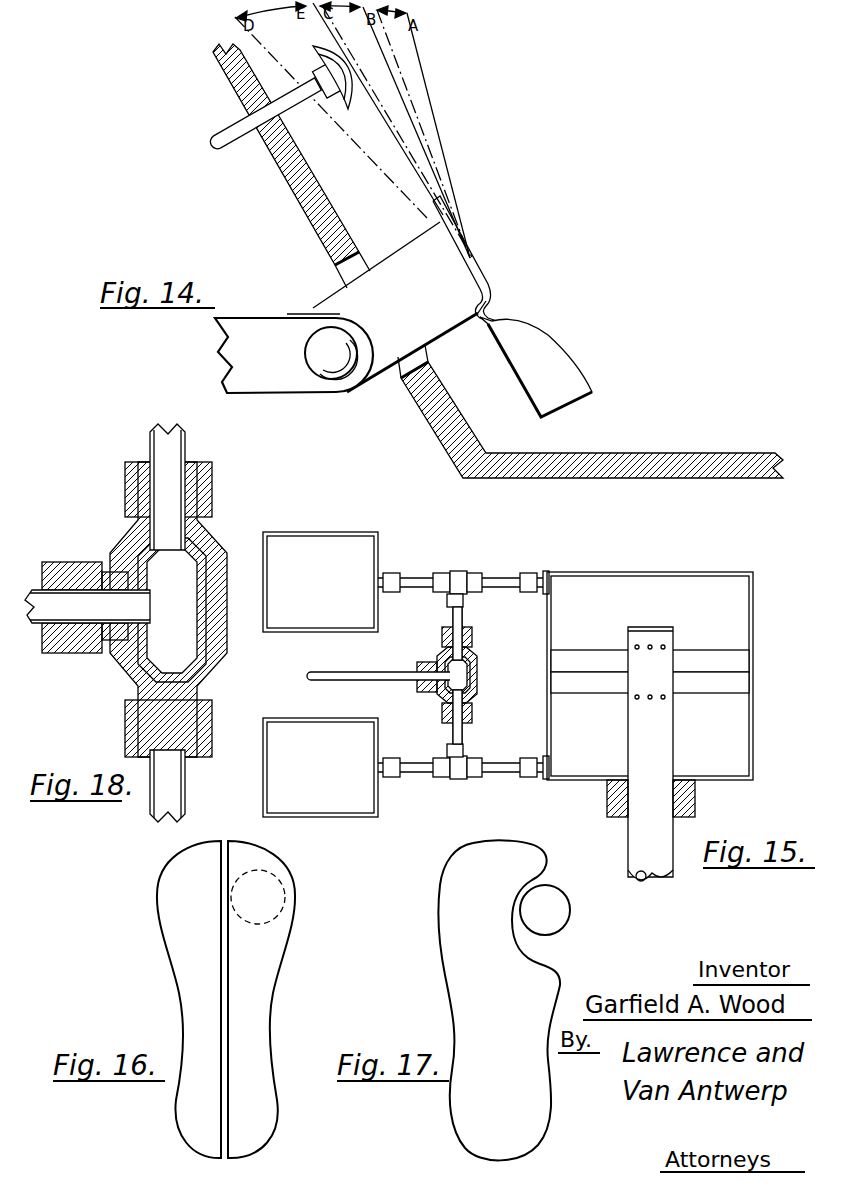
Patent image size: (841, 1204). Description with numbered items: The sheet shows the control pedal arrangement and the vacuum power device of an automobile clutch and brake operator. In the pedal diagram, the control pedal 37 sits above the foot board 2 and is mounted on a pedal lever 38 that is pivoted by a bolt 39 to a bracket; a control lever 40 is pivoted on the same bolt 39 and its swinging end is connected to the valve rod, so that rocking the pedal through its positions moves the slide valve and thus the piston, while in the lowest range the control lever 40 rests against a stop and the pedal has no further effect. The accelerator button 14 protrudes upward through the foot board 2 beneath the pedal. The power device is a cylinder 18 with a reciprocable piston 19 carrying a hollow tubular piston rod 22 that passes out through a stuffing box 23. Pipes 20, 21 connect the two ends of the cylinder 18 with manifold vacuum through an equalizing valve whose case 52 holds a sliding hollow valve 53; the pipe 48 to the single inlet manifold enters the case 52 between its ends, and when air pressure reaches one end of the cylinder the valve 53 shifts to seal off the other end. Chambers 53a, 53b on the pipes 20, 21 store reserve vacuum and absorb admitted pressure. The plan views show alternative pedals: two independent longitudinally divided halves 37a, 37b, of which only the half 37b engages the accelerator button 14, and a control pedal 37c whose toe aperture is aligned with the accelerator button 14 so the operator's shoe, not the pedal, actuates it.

In FIG. 14, the foot board 2 is at (235, 80).
In FIG. 14, the accelerator button 14 is at (340, 92).
In FIG. 16, the accelerator button 14 is at (263, 893).
In FIG. 17, the accelerator button 14 is at (542, 913).
In FIG. 15, the cylinder 18 is at (753, 630).
In FIG. 15, the piston 19 is at (733, 683).
In FIG. 18, the pipe 20 is at (170, 443).
In FIG. 15, the pipe 20 is at (498, 590).
In FIG. 18, the pipe 21 is at (168, 787).
In FIG. 15, the pipe 21 is at (485, 790).
In FIG. 15, the piston rod 22 is at (658, 742).
In FIG. 15, the stuffing box 23 is at (688, 797).
In FIG. 14, the control pedal 37 is at (490, 280).
In FIG. 16, the pedal half 37a is at (197, 975).
In FIG. 16, the pedal half 37b is at (267, 970).
In FIG. 17, the control pedal 37c is at (540, 985).
In FIG. 14, the pedal lever 38 is at (403, 262).
In FIG. 14, the pivot bolt 39 is at (328, 340).
In FIG. 14, the control lever 40 is at (242, 348).
In FIG. 18, the pipe 48 is at (32, 590).
In FIG. 15, the pipe 48 is at (383, 677).
In FIG. 18, the case 52 is at (213, 547).
In FIG. 15, the case 52 is at (477, 654).
In FIG. 18, the hollow valve 53 is at (207, 633).
In FIG. 15, the hollow valve 53 is at (481, 674).
In FIG. 15, the chamber 53a is at (317, 552).
In FIG. 15, the chamber 53b is at (330, 797).